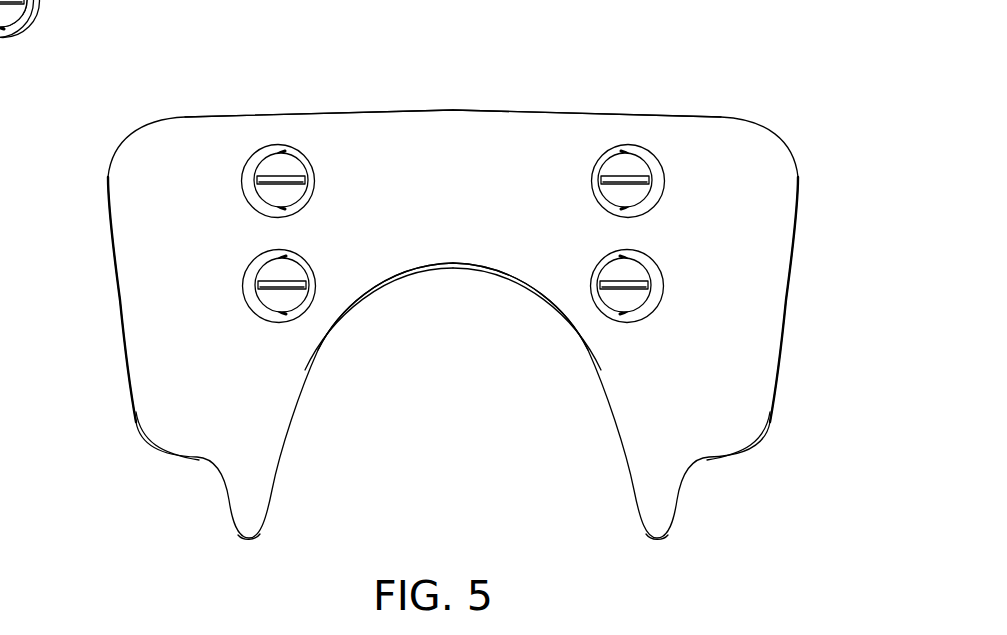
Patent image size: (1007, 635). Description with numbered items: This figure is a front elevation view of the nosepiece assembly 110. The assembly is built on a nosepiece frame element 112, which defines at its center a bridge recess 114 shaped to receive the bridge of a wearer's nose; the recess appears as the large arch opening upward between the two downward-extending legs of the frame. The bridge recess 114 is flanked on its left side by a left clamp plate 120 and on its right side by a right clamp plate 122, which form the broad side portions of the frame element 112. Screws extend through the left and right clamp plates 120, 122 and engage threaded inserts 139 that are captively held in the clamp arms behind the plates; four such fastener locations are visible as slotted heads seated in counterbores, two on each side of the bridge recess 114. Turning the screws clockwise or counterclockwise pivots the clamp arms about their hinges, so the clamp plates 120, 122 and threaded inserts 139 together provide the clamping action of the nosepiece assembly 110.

The nosepiece assembly 110 is at (668, 76).
The nosepiece frame element 112 is at (723, 116).
The bridge recess 114 is at (455, 268).
The left clamp plate 120 is at (781, 336).
The right clamp plate 122 is at (117, 288).
The threaded inserts 139 is at (308, 170).